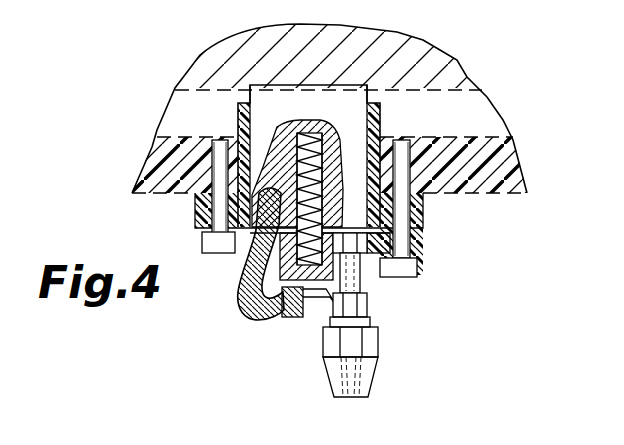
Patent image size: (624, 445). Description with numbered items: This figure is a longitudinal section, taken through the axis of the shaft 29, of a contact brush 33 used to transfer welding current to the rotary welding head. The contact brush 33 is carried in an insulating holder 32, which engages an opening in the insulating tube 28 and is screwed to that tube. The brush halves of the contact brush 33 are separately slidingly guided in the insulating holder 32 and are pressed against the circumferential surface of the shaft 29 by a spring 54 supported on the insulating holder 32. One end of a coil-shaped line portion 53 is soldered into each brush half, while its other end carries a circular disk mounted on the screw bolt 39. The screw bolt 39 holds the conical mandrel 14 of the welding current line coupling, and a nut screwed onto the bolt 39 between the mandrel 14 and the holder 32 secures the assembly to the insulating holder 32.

The conical mandrel 14 is at (327, 375).
The insulating tube 28 is at (503, 160).
The shaft 29 is at (437, 53).
The insulating holder 32 is at (423, 219).
The contact brush 33 is at (268, 100).
The screw bolt 39 is at (373, 282).
The line portion 53 is at (240, 309).
The spring 54 is at (298, 134).